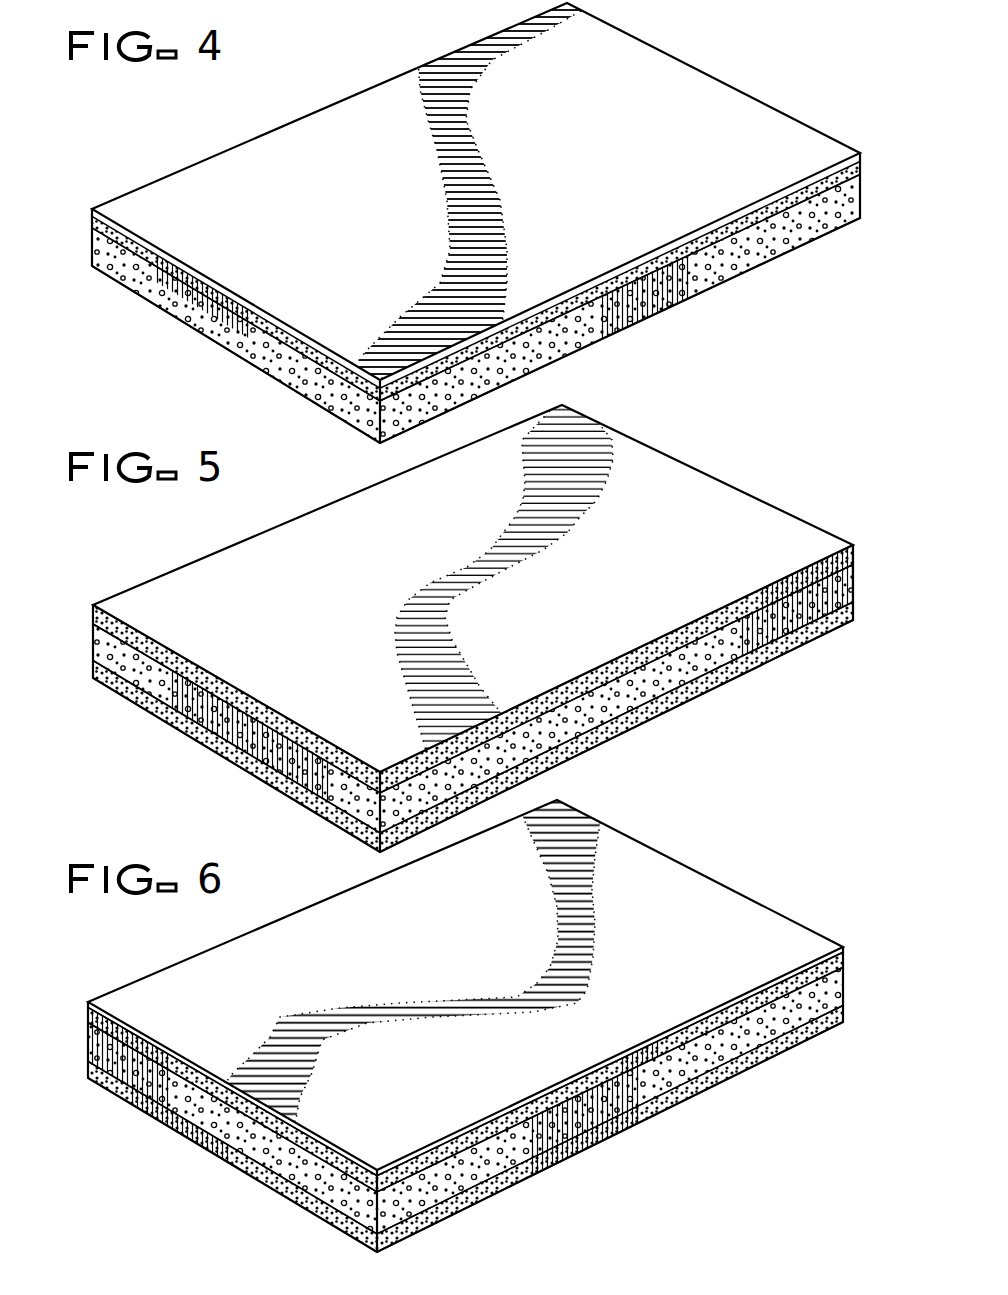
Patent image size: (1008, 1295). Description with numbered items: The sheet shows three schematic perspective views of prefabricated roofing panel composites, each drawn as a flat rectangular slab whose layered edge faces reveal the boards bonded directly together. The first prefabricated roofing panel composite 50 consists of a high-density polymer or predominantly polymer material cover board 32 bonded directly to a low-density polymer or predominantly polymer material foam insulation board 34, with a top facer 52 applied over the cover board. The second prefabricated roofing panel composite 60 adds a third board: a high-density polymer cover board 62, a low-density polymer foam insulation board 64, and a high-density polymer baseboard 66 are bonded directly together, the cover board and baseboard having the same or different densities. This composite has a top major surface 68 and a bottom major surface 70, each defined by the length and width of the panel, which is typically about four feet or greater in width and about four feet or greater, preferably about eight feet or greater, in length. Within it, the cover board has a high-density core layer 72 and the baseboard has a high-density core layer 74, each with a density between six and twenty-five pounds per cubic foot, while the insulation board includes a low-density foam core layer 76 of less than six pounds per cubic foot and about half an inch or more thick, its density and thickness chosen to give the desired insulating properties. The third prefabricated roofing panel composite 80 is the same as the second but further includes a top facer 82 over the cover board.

In FIG. 4, the prefabricated roofing panel composite 50 is at (476, 221).
In FIG. 4, the top facer 52 is at (452, 102).
In FIG. 4, the high-density polymer or predominantly polymer material cover board 32 is at (742, 229).
In FIG. 4, the low-density polymer or predominantly polymer material foam insulation board 34 is at (704, 276).
In FIG. 5, the prefabricated roofing panel composite 60 is at (458, 622).
In FIG. 5, the high-density polymer or predominantly polymer material cover board 62 is at (145, 652).
In FIG. 6, the high-density polymer or predominantly polymer material cover board 62 is at (719, 1022).
In FIG. 5, the low-density polymer or predominantly polymer material foam insulation board 64 is at (175, 698).
In FIG. 6, the low-density polymer or predominantly polymer material foam insulation board 64 is at (685, 1069).
In FIG. 5, the high-density polymer or predominantly polymer material baseboard 66 is at (210, 742).
In FIG. 6, the high-density polymer or predominantly polymer material baseboard 66 is at (652, 1109).
In FIG. 5, the top major surface 68 is at (252, 581).
In FIG. 5, the bottom major surface 70 is at (778, 659).
In FIG. 5, the high-density polymer or predominantly polymer material core layer 72 is at (693, 641).
In FIG. 5, the high-density polymer or predominantly polymer material core layer 74 is at (641, 720).
In FIG. 5, the low-density polymer or predominantly polymer material foam core layer 76 is at (661, 680).
In FIG. 6, the prefabricated roofing panel composite 80 is at (465, 1008).
In FIG. 6, the top facer 82 is at (263, 1061).